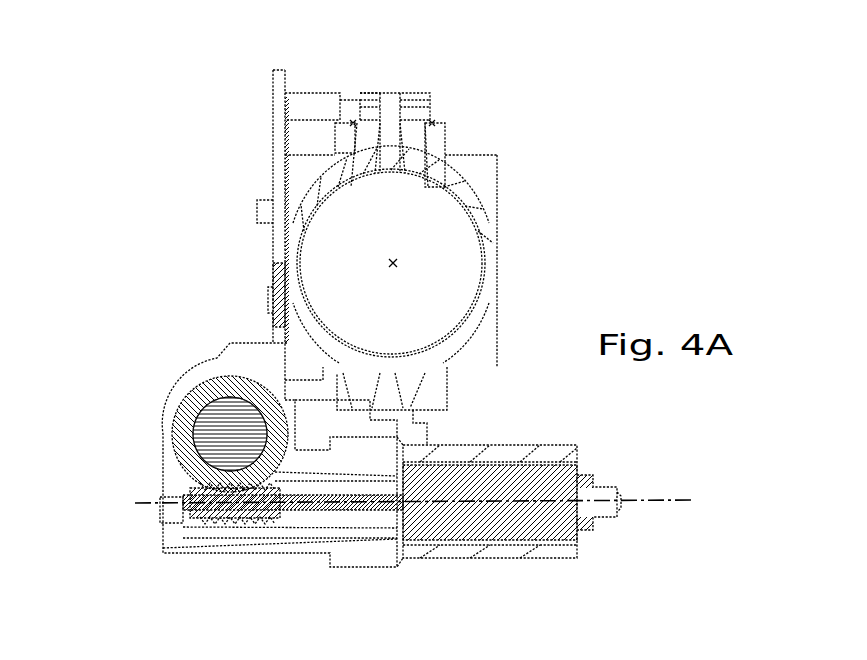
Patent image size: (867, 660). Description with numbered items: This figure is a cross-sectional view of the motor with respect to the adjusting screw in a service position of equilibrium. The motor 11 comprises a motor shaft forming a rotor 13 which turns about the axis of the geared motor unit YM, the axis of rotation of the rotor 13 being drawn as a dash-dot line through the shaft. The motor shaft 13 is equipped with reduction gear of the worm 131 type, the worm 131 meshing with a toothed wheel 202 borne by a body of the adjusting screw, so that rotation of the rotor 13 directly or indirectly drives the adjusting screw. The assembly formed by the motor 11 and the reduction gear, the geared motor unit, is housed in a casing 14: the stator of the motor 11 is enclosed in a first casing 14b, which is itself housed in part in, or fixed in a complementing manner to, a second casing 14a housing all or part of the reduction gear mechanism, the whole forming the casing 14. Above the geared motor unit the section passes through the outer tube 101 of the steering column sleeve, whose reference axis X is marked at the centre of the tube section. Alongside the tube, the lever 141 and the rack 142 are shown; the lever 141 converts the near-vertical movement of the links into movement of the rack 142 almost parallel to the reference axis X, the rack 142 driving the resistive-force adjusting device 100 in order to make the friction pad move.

The resistive-force adjusting device 100 is at (445, 95).
The outer tube 101 is at (500, 222).
The lever 141 is at (276, 132).
The rack 142 is at (350, 100).
The reference axis X is at (397, 263).
The casing 14 is at (165, 476).
The second casing 14a is at (237, 556).
The first casing 14b is at (545, 560).
The toothed wheel 202 is at (200, 392).
The worm 131 is at (207, 519).
The rotor 13 is at (325, 510).
The motor 11 is at (530, 472).
The axis of the geared motor unit YM is at (421, 467).